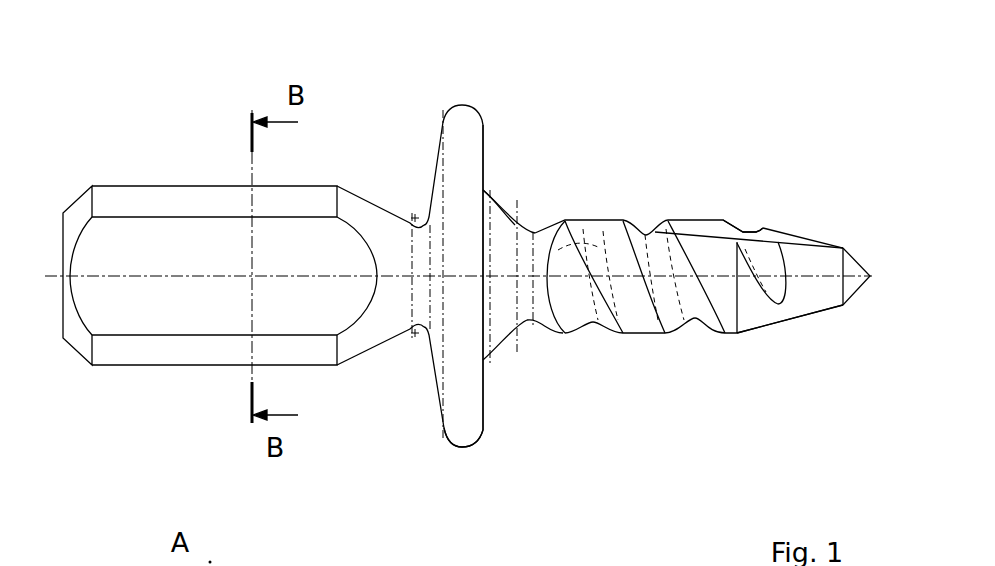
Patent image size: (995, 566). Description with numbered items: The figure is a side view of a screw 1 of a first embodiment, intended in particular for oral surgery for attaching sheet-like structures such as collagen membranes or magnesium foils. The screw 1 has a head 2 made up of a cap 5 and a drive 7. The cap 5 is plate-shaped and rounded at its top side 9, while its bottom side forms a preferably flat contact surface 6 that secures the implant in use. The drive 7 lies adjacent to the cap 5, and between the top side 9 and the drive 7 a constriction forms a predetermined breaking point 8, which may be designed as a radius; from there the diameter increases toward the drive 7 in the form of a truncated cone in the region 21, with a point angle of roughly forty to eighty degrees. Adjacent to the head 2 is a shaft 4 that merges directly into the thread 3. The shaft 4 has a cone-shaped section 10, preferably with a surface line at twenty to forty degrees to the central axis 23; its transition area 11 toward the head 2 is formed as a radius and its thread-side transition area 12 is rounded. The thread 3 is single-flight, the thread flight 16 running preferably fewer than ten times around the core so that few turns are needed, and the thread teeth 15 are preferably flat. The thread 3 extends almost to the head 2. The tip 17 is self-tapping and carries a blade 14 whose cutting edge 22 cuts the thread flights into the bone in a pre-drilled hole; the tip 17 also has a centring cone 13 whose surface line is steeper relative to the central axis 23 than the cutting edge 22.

The screw 1 is at (193, 392).
The head 2 is at (393, 118).
The thread 3 is at (717, 277).
The shaft 4 is at (538, 258).
The cap 5 is at (460, 417).
The contact surface 6 is at (498, 416).
The drive 7 is at (155, 245).
The predetermined breaking point 8 is at (417, 323).
The top side 9 is at (425, 200).
The cone-shaped section 10 is at (500, 230).
The transition area 11 is at (483, 188).
The thread-side transition area 12 is at (540, 325).
The centring cone 13 is at (848, 270).
The blade 14 is at (764, 234).
The thread teeth 15 is at (620, 551).
The thread flight 16 is at (653, 250).
The tip 17 is at (773, 322).
The region 21 is at (365, 323).
The cutting edge 22 is at (788, 238).
The central axis 23 is at (150, 273).